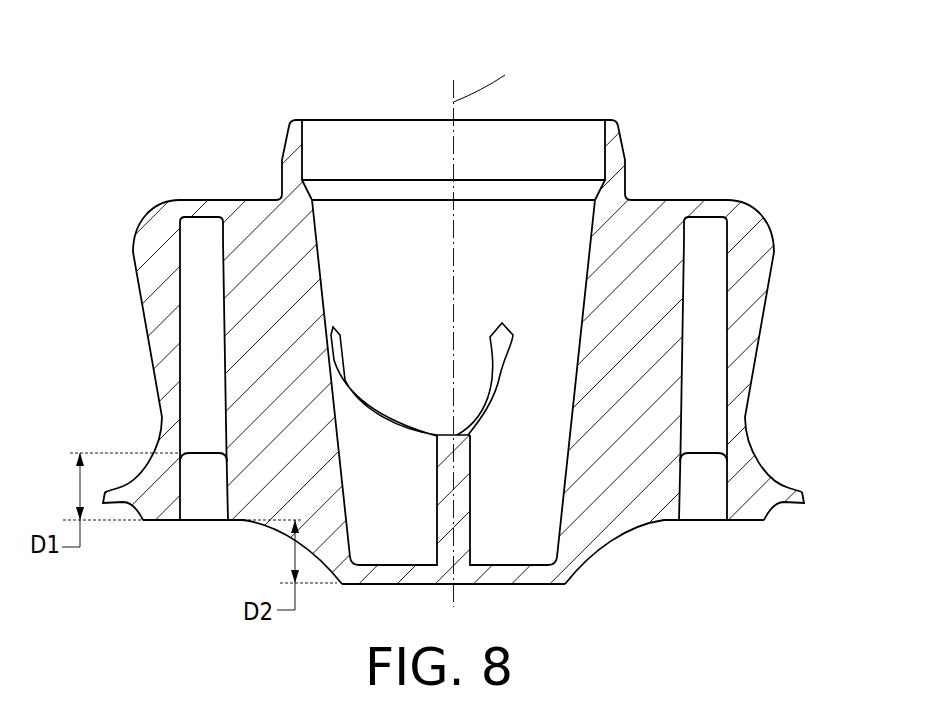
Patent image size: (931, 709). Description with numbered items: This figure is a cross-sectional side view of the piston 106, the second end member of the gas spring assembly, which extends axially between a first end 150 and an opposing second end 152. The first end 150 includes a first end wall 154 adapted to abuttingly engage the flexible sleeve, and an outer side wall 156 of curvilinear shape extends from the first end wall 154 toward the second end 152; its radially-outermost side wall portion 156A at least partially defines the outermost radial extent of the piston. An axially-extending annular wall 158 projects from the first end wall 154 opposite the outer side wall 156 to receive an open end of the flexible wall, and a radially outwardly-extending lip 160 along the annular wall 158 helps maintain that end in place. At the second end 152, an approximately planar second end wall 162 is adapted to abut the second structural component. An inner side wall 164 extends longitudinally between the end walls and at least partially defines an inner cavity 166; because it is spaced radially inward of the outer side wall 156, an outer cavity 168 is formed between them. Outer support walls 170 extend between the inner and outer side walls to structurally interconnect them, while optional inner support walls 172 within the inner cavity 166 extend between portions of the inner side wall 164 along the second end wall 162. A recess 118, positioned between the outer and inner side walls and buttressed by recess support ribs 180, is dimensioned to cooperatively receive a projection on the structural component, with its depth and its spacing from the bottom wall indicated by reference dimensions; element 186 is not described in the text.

The piston 106 is at (672, 80).
The first end 150 is at (692, 128).
The second end 152 is at (740, 558).
The first end wall 154 is at (640, 198).
The outer side wall 156 is at (768, 293).
The radially-outermost side wall portion 156A is at (800, 497).
The annular wall 158 is at (293, 143).
The lip 160 is at (282, 160).
The second end wall 162 is at (522, 587).
The inner side wall 164 is at (585, 318).
The inner cavity 166 is at (498, 218).
The outer cavity 168 is at (203, 350).
The outer support walls 170 is at (245, 263).
The inner support walls 172 is at (380, 407).
The recess support ribs 180 is at (203, 388).
The slot bottom 186 is at (162, 522).
The recess 118 is at (210, 505).